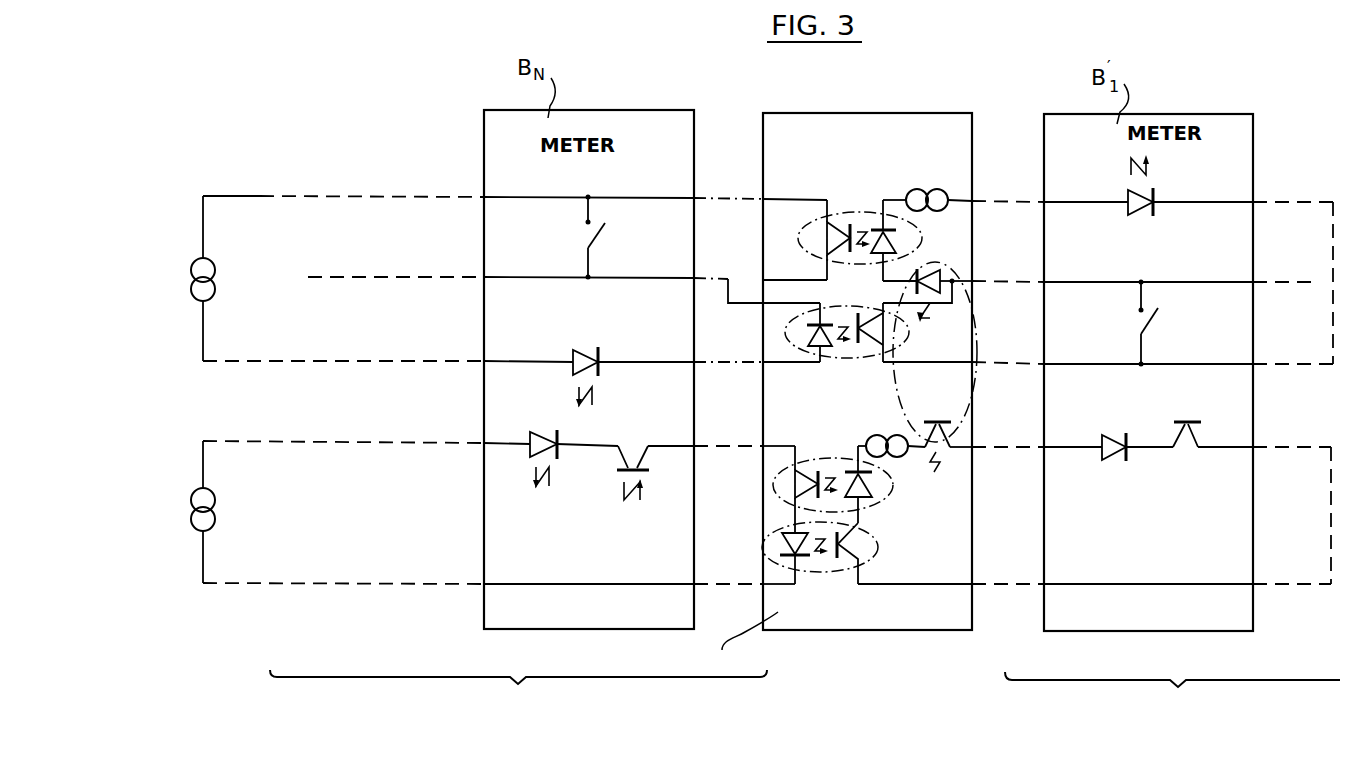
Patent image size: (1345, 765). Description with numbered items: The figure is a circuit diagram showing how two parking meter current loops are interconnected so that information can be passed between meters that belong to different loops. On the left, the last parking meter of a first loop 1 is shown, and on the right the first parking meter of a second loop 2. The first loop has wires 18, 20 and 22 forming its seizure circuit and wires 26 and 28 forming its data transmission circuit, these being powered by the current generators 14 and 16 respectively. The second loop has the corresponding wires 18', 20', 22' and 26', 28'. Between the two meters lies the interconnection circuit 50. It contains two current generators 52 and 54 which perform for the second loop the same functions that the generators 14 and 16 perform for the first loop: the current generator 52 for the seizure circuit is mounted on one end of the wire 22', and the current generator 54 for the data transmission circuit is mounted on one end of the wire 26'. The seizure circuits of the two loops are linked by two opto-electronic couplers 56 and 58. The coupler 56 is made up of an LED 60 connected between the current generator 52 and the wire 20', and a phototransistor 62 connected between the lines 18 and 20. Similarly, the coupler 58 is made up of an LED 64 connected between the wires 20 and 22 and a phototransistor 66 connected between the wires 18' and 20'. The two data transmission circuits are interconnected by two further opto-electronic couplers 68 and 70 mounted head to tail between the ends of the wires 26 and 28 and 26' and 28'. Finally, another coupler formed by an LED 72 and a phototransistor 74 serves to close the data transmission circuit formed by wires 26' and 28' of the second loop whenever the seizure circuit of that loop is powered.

The first circuit (meter BN side) 1 is at (518, 698).
The second circuit (meter B'1 side) 2 is at (1172, 700).
The current generator 14 is at (213, 292).
The current generator 16 is at (217, 518).
The wire 18 is at (587, 178).
The wire 20 is at (640, 269).
The wire 22 is at (587, 340).
The wire 26 is at (587, 426).
The wire 28 is at (587, 565).
The wire 18' is at (1152, 344).
The wire 20' is at (1145, 304).
The wire 22' is at (1152, 259).
The wire 26' is at (1151, 491).
The wire 28' is at (1151, 559).
The interconnection circuit 50 is at (912, 123).
The current generator 52 is at (935, 190).
The current generator 54 is at (882, 436).
The opto-electronic coupler 56 is at (866, 222).
The opto-electronic coupler 58 is at (869, 340).
The LED 60 is at (900, 238).
The phototransistor 62 is at (830, 243).
The LED 64 is at (801, 360).
The phototransistor 66 is at (895, 330).
The opto-electronic coupler 68 is at (893, 490).
The opto-electronic coupler 70 is at (886, 548).
The LED 72 is at (930, 269).
The phototransistor 74 is at (940, 453).